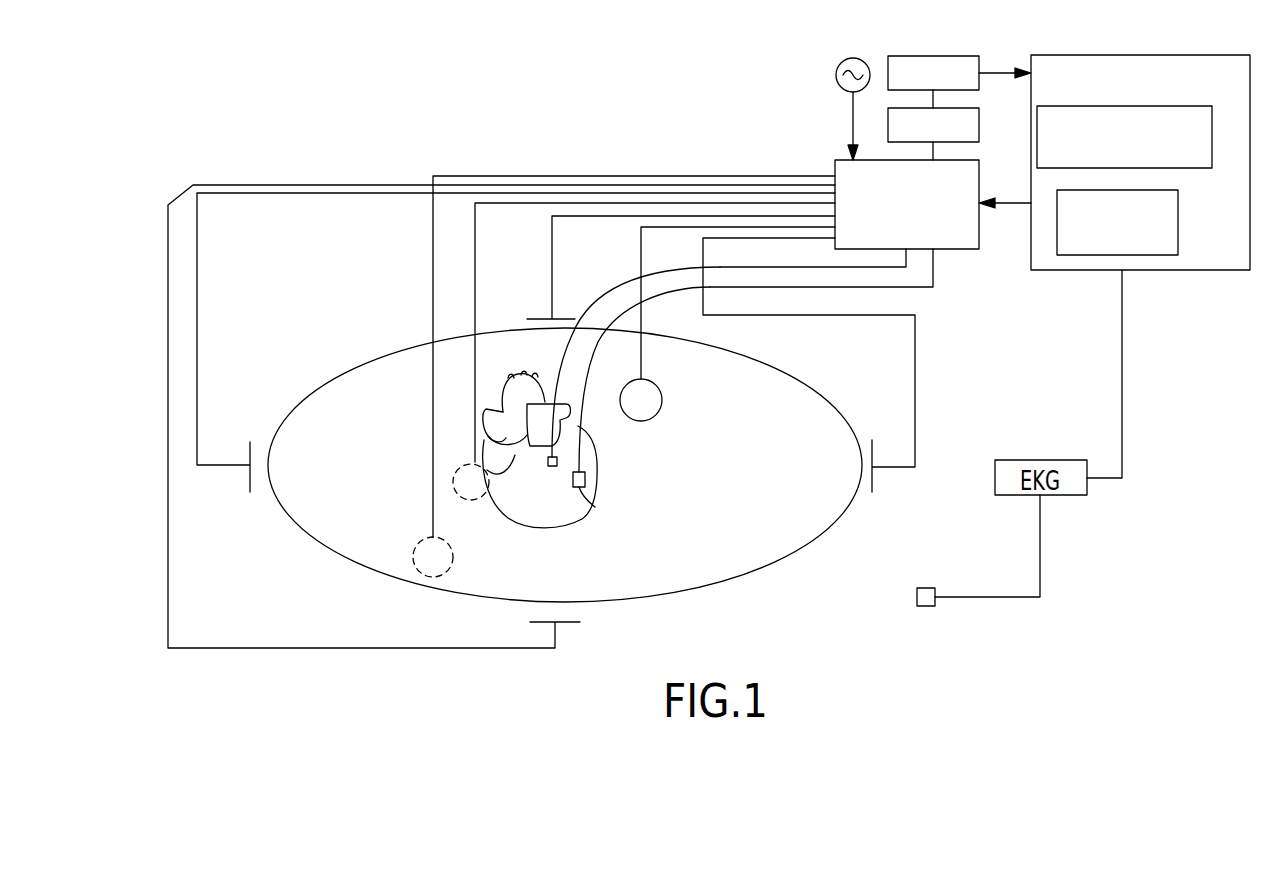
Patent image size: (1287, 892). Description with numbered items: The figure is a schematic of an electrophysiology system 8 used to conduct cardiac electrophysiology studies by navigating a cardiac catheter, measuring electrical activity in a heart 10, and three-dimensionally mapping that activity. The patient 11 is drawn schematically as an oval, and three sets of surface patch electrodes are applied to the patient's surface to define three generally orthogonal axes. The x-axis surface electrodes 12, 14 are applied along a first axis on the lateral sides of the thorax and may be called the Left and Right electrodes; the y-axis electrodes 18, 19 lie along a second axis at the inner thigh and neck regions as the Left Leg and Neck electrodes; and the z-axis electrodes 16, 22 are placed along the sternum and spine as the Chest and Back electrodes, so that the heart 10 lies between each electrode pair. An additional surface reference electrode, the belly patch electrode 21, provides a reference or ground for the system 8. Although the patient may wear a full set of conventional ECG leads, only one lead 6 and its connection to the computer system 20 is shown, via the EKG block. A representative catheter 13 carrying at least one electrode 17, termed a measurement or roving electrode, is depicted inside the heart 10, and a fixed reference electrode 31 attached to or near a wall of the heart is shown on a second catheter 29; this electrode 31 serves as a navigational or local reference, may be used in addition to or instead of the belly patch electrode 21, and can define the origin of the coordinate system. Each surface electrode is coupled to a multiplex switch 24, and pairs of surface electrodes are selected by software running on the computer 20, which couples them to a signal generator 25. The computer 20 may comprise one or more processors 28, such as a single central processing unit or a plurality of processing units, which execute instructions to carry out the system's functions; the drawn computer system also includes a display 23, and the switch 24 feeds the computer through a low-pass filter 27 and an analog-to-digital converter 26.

The lead 6 is at (915, 605).
The electrophysiology system 8 is at (246, 96).
The heart 10 is at (585, 478).
The patient 11 is at (780, 368).
The x-axis surface electrode 12 is at (540, 317).
The catheter 13 is at (933, 275).
The x-axis surface electrode 14 is at (555, 630).
The z-axis electrode 16 is at (641, 358).
The electrode 17 is at (595, 507).
The y-axis electrode 18 is at (249, 478).
The y-axis electrode 19 is at (878, 478).
The computer system 20 is at (1232, 255).
The belly patch electrode 21 is at (433, 477).
The z-axis electrode 22 is at (477, 253).
The display 23 is at (1130, 243).
The multiplex switch 24 is at (918, 228).
The signal generator 25 is at (837, 63).
The analog-to-digital converter 26 is at (952, 56).
The low pass filter 27 is at (979, 118).
The processor 28 is at (1135, 163).
The second catheter 29 is at (567, 345).
The fixed reference electrode 31 is at (552, 467).